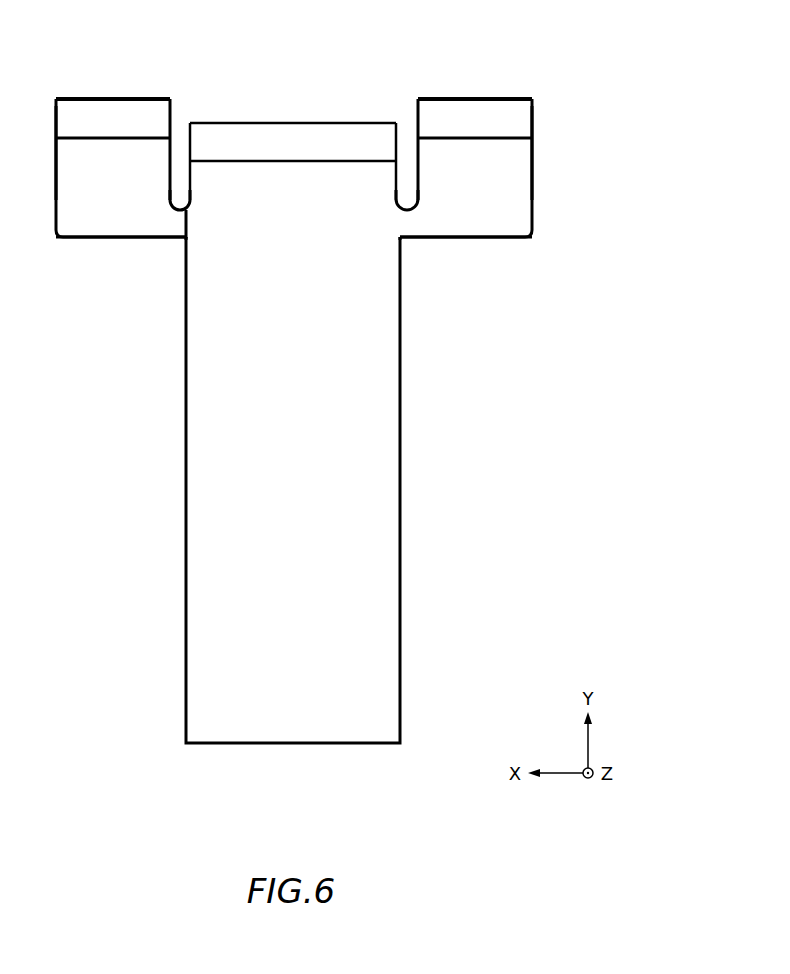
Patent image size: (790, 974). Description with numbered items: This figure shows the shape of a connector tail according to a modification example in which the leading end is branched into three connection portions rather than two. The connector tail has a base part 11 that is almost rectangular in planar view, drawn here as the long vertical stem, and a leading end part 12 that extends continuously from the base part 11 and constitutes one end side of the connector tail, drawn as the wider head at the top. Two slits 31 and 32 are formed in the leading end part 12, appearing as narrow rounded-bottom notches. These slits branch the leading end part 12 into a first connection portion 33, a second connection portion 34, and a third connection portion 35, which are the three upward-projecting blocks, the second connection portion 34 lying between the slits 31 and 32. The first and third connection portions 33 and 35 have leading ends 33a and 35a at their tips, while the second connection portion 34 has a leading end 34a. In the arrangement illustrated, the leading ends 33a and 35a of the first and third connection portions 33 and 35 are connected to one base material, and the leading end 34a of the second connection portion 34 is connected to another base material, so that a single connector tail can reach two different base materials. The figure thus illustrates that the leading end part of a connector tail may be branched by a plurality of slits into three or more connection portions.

The base part 11 is at (387, 478).
The leading end part 12 is at (118, 230).
The slit 31 is at (170, 190).
The slit 32 is at (398, 190).
The first connection portion 33 is at (87, 152).
The leading end of first connection portion 33a is at (136, 108).
The second connection portion 34 is at (263, 175).
The leading end of second connection portion 34a is at (323, 130).
The third connection portion 35 is at (449, 152).
The leading end of third connection portion 35a is at (497, 108).